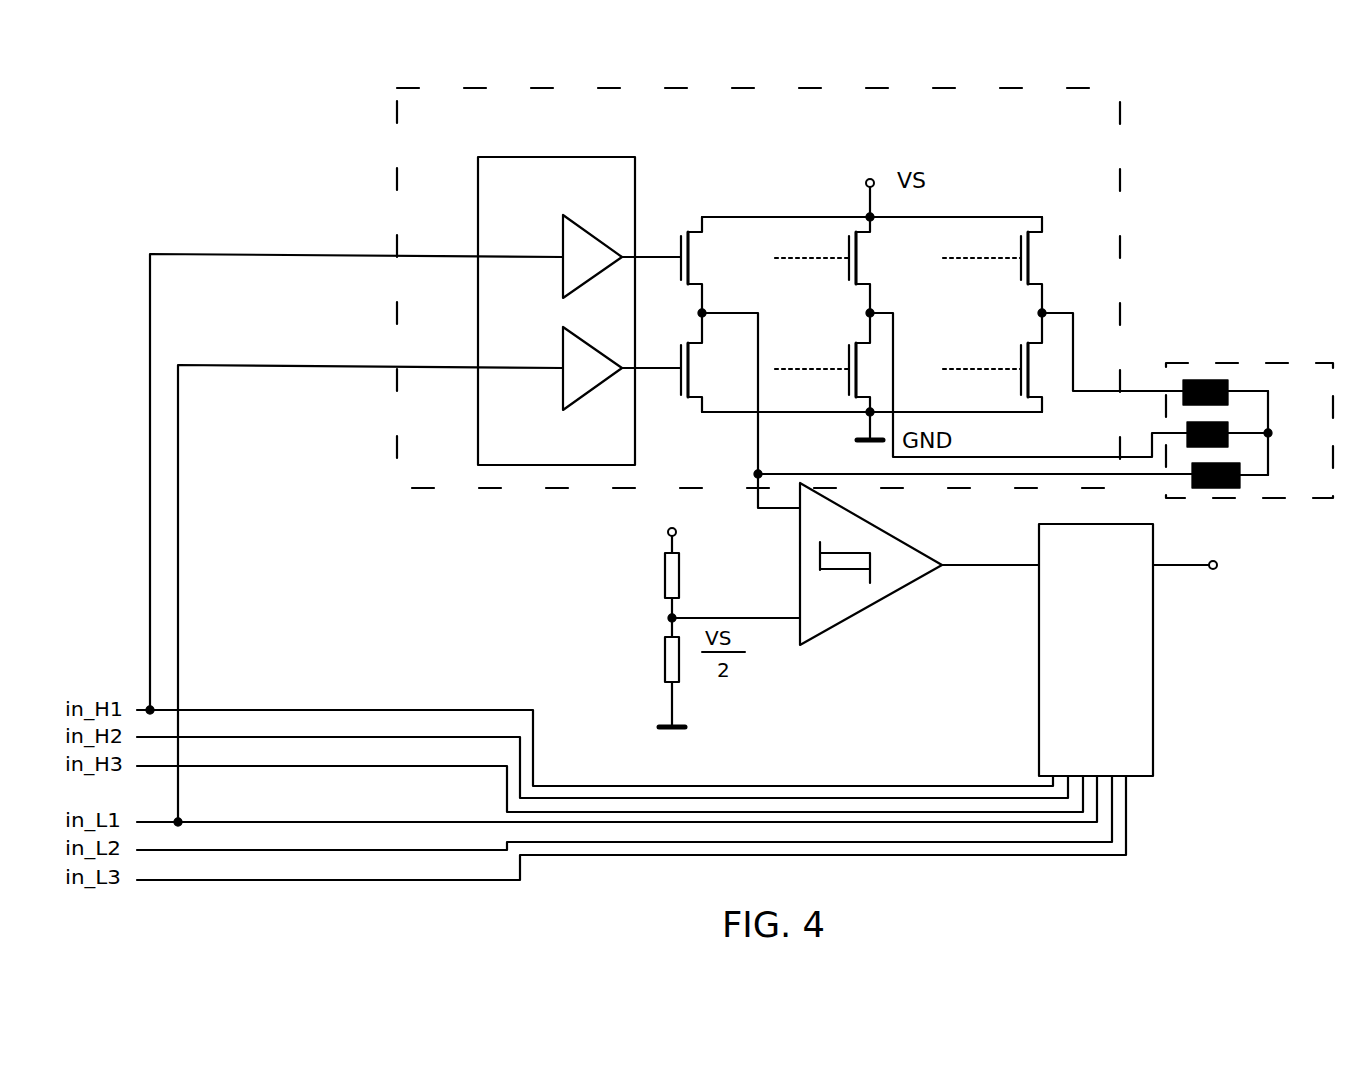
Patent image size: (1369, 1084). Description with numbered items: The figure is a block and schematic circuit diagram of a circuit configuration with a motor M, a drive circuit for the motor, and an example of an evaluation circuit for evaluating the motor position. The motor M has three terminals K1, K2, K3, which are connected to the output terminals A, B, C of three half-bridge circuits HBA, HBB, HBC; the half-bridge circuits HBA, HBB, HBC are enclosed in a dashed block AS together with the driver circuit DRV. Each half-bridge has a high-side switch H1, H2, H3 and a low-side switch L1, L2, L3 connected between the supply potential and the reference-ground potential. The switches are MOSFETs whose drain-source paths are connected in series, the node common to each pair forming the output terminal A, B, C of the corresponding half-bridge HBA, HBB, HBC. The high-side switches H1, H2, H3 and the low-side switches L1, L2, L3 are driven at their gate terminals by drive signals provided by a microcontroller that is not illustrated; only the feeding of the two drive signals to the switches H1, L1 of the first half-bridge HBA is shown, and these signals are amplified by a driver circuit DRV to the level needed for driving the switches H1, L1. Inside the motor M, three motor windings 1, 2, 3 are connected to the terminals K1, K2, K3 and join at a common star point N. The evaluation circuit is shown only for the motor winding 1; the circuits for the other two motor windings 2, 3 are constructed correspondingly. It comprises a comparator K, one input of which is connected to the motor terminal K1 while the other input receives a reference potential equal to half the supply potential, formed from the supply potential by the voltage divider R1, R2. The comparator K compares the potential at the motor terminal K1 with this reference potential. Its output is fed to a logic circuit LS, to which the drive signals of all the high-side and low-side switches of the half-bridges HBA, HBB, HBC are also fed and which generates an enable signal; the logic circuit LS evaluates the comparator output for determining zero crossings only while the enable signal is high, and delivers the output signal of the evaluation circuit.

The output stage / driver circuit block AS is at (1133, 120).
The driver circuit DRV is at (556, 290).
The first half-bridge circuit HBA is at (687, 281).
The second half-bridge circuit HBB is at (822, 281).
The third half-bridge circuit HBC is at (998, 281).
The high-side switch H1 is at (660, 237).
The low-side switch L1 is at (660, 356).
The high-side switch H2 is at (824, 239).
The low-side switch L2 is at (824, 358).
The high-side switch H3 is at (996, 239).
The low-side switch L3 is at (996, 358).
The output terminal A is at (713, 300).
The output terminal B is at (882, 299).
The output terminal C is at (1054, 300).
The motor terminal K1 is at (975, 488).
The motor terminal K2 is at (1028, 385).
The motor terminal K3 is at (1112, 352).
The motor M is at (1249, 410).
The motor winding 1 is at (1230, 470).
The motor winding 2 is at (1227, 426).
The motor winding 3 is at (1225, 384).
The star point / neutral node of motor N is at (1286, 433).
The comparator K is at (919, 564).
The voltage divider resistor R1 is at (696, 568).
The voltage divider resistor R2 is at (691, 676).
The logic circuit LS is at (1152, 650).